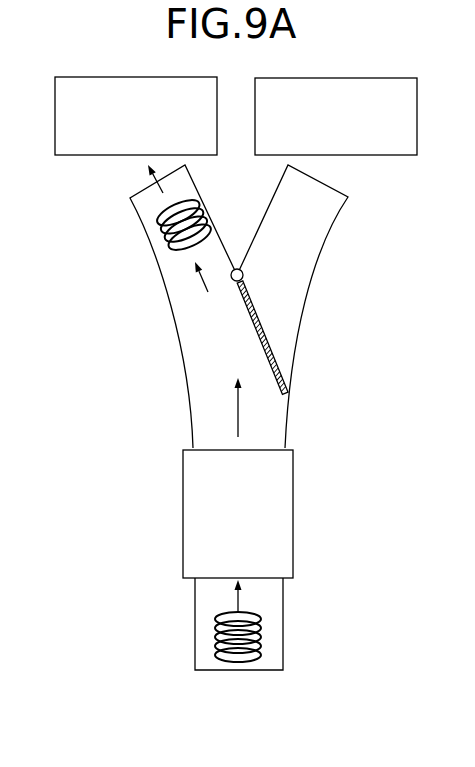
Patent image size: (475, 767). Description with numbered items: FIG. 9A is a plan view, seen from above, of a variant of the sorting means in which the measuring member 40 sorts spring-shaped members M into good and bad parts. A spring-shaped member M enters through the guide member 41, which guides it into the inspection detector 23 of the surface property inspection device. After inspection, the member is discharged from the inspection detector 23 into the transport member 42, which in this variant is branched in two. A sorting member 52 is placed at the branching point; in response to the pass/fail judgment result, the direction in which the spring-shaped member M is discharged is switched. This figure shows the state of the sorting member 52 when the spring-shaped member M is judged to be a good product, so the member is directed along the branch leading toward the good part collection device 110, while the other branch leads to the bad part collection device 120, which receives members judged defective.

The good part collection device 110 is at (80, 155).
The bad part collection device 120 is at (385, 155).
The measuring member 40 is at (344, 333).
The transport member 42 is at (180, 332).
The sorting member 52 is at (278, 363).
The inspection detector 23 is at (183, 510).
The guide member 41 is at (195, 617).
The spring-shaped member M is at (260, 637).